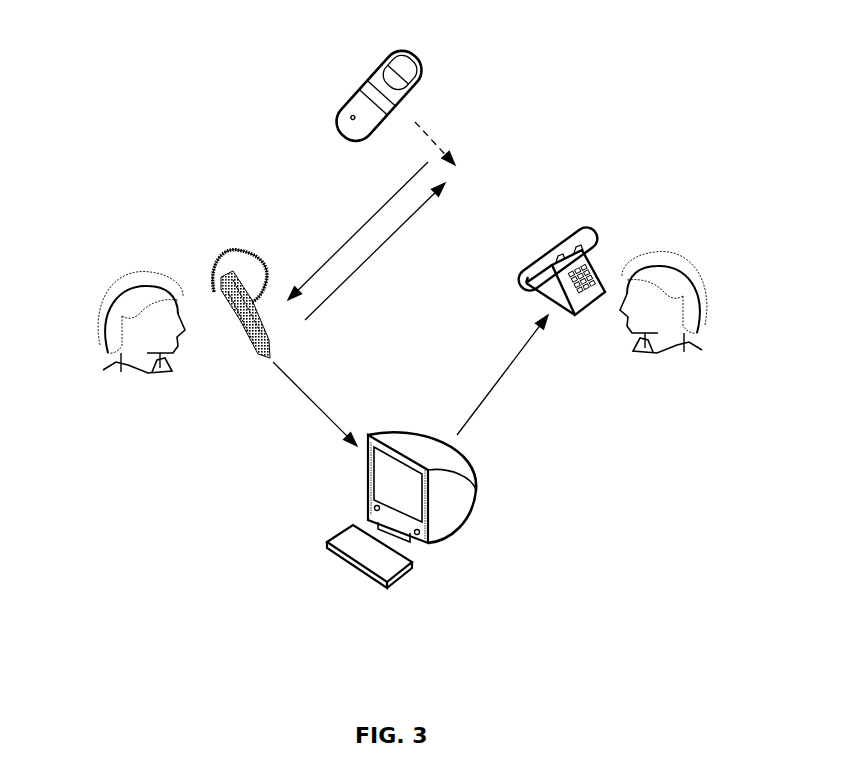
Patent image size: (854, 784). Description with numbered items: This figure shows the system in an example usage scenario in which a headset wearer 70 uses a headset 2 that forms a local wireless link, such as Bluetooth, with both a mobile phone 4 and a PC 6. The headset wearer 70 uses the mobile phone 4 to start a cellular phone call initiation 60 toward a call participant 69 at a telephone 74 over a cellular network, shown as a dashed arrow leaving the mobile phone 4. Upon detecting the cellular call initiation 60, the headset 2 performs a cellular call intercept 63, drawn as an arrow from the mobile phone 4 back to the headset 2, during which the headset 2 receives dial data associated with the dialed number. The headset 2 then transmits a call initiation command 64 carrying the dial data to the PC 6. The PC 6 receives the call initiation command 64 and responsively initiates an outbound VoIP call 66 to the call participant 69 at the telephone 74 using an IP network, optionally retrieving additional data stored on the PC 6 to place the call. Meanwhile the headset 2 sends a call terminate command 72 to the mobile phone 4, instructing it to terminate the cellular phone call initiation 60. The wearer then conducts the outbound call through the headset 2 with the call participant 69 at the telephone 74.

The headset 2 is at (213, 263).
The mobile phone 4 is at (428, 58).
The PC 6 is at (465, 525).
The cellular phone call initiation 60 is at (484, 137).
The cellular call intercept 63 is at (345, 231).
The call initiation command 64 is at (273, 420).
The outbound VoIP call 66 is at (502, 384).
The call participant 69 is at (648, 337).
The headset wearer 70 is at (117, 273).
The call terminate command 72 is at (398, 251).
The telephone 74 is at (595, 228).